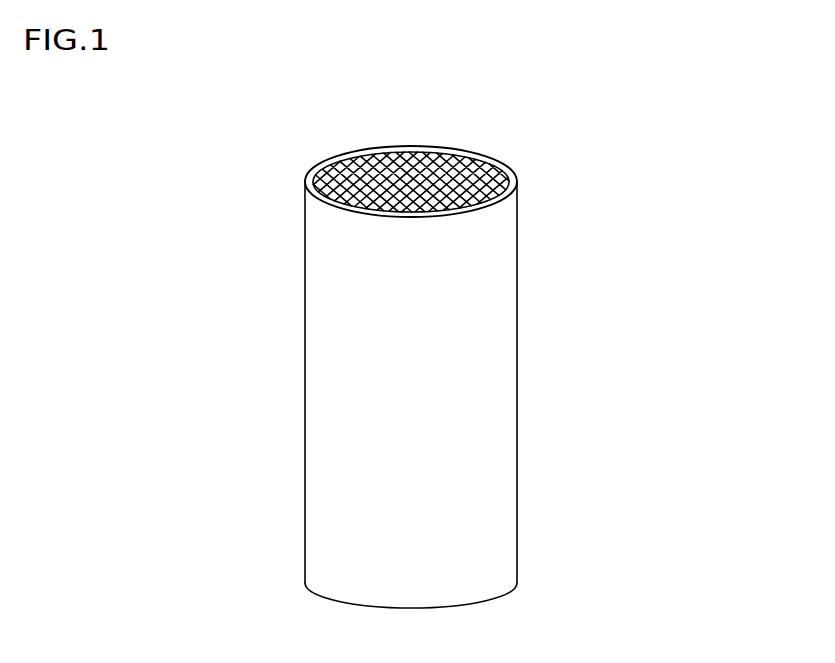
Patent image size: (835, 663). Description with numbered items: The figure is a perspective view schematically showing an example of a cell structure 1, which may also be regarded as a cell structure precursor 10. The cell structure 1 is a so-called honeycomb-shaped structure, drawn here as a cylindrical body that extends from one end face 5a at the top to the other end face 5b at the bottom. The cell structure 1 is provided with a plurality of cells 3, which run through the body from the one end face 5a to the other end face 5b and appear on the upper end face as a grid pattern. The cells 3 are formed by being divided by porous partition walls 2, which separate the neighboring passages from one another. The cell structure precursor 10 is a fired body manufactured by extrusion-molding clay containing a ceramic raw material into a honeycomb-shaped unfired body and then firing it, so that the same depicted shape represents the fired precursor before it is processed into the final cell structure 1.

The cell structure 1 is at (499, 373).
The cell structure precursor 10 is at (533, 187).
The partition wall 2 is at (330, 167).
The cell 3 is at (432, 163).
The one end face 5a is at (373, 128).
The the other end face 5b is at (494, 612).